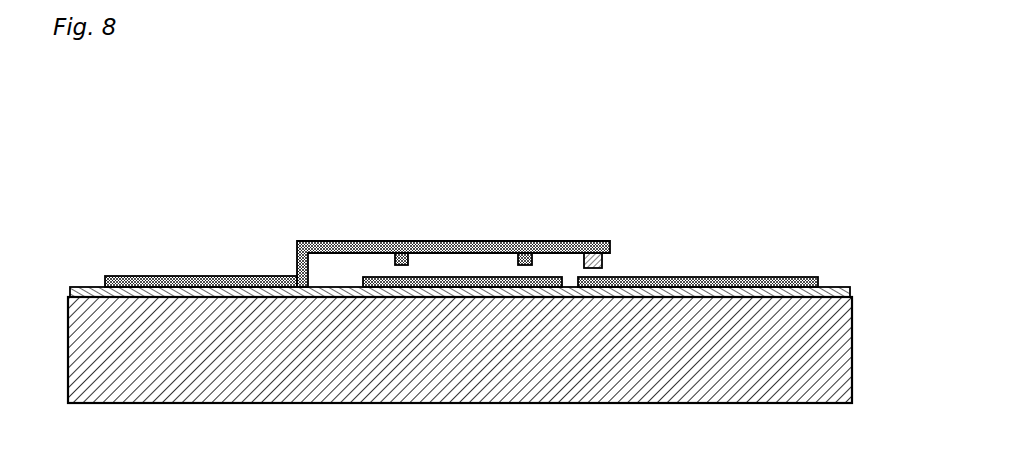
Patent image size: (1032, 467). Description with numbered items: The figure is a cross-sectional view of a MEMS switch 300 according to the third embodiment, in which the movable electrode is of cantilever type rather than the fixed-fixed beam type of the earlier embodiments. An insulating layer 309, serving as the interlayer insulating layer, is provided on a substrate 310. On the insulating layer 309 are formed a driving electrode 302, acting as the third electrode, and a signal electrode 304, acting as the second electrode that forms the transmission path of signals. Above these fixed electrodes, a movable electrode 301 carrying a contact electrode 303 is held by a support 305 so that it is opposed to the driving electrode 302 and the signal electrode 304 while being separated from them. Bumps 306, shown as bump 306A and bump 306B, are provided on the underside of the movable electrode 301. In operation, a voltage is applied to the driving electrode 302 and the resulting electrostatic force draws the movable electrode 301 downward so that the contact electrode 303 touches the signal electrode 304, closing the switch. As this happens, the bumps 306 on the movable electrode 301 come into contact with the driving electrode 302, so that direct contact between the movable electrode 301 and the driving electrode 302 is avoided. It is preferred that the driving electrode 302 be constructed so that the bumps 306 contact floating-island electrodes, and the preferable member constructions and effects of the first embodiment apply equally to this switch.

The MEMS switch 300 is at (178, 116).
The movable electrode 301 is at (458, 242).
The driving electrode 302 is at (462, 283).
The contact electrode 303 is at (609, 242).
The signal electrode 304 is at (702, 282).
The support 305 is at (200, 280).
The bumps 306 is at (437, 168).
The bump 306A is at (400, 253).
The bump 306B is at (522, 253).
The insulating layer 309 is at (275, 298).
The substrate 310 is at (673, 363).